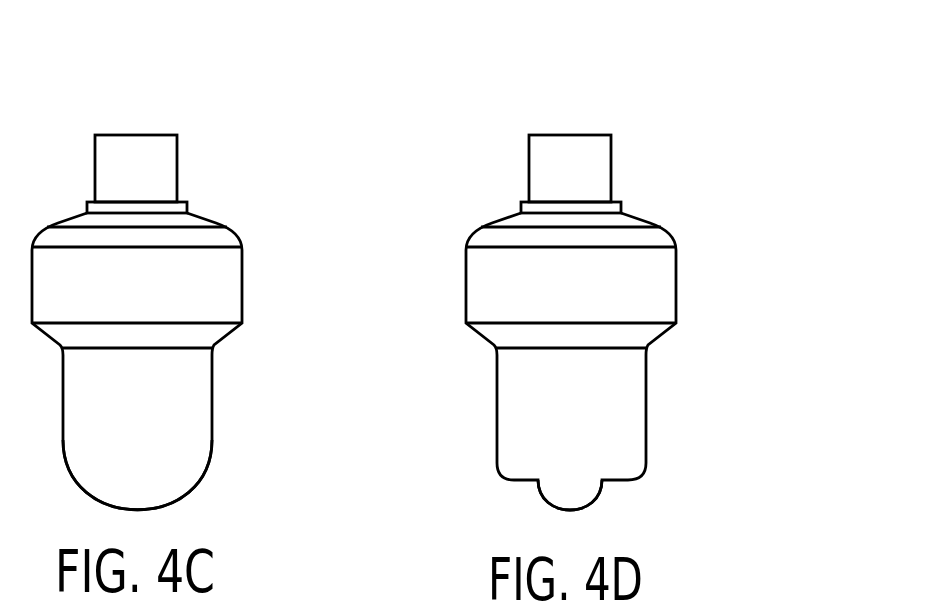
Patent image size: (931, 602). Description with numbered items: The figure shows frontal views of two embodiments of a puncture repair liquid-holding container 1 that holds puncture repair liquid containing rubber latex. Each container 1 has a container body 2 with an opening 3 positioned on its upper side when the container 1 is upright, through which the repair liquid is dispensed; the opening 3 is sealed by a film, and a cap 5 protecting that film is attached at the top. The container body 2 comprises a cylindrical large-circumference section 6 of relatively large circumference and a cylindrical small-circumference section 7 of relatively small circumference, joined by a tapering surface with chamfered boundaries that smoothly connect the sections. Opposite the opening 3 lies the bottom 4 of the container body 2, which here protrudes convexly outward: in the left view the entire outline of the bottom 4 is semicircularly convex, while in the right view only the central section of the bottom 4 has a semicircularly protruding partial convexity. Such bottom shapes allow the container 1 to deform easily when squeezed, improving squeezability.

In FIG. 4C, the puncture repair liquid-holding container 1 is at (175, 118).
In FIG. 4D, the puncture repair liquid-holding container 1 is at (609, 118).
In FIG. 4C, the container body 2 is at (231, 224).
In FIG. 4D, the container body 2 is at (665, 224).
In FIG. 4C, the opening 3 is at (180, 199).
In FIG. 4D, the opening 3 is at (614, 199).
In FIG. 4C, the bottom 4 is at (178, 497).
In FIG. 4D, the bottom 4 is at (600, 490).
In FIG. 4C, the cap 5 is at (168, 160).
In FIG. 4D, the cap 5 is at (602, 160).
In FIG. 4C, the large-circumference section 6 is at (243, 278).
In FIG. 4D, the large-circumference section 6 is at (677, 278).
In FIG. 4C, the small-circumference section 7 is at (213, 412).
In FIG. 4D, the small-circumference section 7 is at (646, 412).